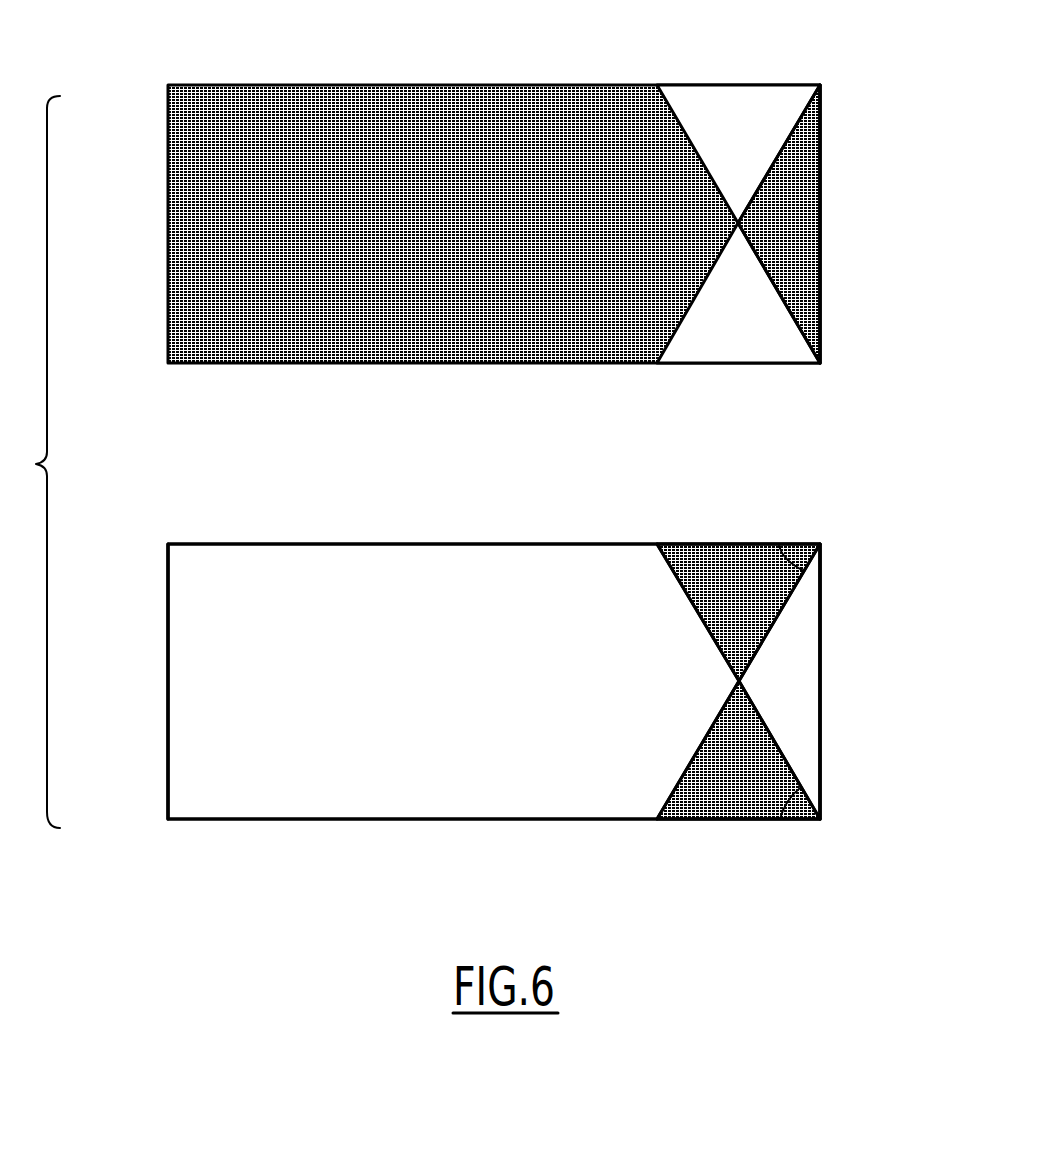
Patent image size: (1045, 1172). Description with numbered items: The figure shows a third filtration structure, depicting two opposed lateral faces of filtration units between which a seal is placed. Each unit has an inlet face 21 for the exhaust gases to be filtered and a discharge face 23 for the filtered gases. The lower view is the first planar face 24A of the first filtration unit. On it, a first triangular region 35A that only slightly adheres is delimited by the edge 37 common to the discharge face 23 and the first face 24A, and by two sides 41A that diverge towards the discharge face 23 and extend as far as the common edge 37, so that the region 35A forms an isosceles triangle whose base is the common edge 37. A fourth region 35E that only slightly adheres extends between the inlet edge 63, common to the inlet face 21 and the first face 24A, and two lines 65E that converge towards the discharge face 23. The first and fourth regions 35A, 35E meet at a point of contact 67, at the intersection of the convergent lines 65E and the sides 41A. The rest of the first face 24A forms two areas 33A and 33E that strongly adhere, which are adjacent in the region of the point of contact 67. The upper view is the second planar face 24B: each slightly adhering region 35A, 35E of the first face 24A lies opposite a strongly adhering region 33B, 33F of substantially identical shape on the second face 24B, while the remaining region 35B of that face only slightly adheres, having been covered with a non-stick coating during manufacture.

The inlet face 21 is at (160, 250).
The discharge face 23 is at (842, 147).
The region that strongly adheres 33F is at (391, 112).
The region that strongly adheres 33B is at (798, 234).
The common edge 37 is at (821, 300).
The region that only slightly adheres 35B is at (712, 336).
The second planar face 24B is at (430, 350).
The first planar face 24A is at (430, 578).
The inlet edge 63 is at (168, 621).
The fourth region that only slightly adheres 35E is at (536, 560).
The area that strongly adheres 33A is at (712, 558).
The area that strongly adheres 33E is at (711, 800).
The sides 41A is at (779, 545).
The convergent lines 65E is at (695, 612).
The first triangular region that only slightly adheres 35A is at (797, 643).
The point of contact 67 is at (742, 681).